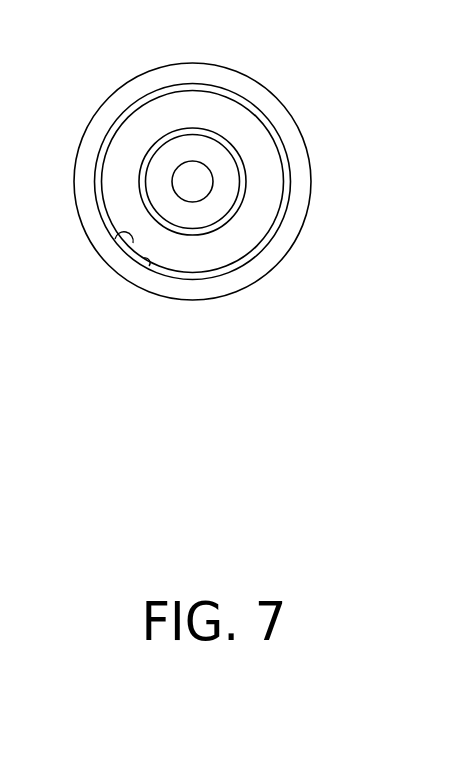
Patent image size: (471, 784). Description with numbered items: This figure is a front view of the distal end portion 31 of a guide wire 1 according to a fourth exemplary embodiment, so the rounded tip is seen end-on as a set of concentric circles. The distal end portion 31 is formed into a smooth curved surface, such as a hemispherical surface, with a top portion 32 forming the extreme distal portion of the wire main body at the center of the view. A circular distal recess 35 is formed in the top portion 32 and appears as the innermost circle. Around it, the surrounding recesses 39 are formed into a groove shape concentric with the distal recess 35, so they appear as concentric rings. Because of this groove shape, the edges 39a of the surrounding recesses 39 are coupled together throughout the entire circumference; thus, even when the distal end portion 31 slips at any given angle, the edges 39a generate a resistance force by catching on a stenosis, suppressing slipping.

The guide wire 1 is at (280, 97).
The distal end portion 31 is at (297, 210).
The top portion 32 is at (192, 173).
The distal recess 35 is at (181, 165).
The surrounding recesses 39 is at (287, 150).
The edges 39a is at (115, 236).